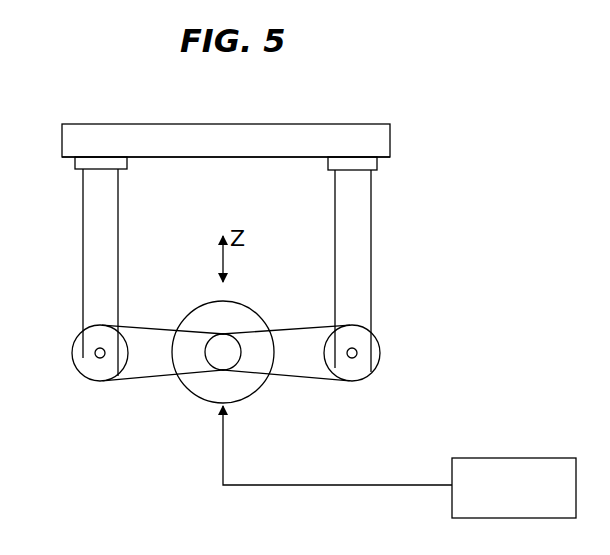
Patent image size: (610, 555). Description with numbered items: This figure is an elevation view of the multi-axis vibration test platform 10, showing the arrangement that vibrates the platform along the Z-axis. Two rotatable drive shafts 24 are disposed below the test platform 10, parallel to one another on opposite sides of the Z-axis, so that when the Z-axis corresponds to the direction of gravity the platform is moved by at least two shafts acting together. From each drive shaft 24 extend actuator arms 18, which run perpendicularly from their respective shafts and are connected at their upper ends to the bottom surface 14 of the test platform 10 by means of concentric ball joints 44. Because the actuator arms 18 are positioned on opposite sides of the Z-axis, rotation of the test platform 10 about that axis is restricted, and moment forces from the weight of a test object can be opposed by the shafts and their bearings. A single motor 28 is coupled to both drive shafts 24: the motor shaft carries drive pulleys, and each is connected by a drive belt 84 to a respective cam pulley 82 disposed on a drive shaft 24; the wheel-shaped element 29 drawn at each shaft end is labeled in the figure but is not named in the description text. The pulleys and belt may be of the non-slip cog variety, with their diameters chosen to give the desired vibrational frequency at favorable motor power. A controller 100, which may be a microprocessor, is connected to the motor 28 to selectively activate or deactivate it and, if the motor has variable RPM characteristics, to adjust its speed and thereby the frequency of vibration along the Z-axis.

The multi-axis vibration test platform 10 is at (373, 124).
The bottom surface 14 is at (236, 160).
The concentric ball joints 44 is at (75, 163).
The actuator arms 18 is at (83, 191).
The idler pulleys 29 is at (73, 340).
The rotatable drive shafts 24 is at (97, 358).
The motor 28 is at (262, 390).
The cam pulley 82 is at (232, 332).
The drive belt 84 is at (148, 381).
The controller 100 is at (569, 458).